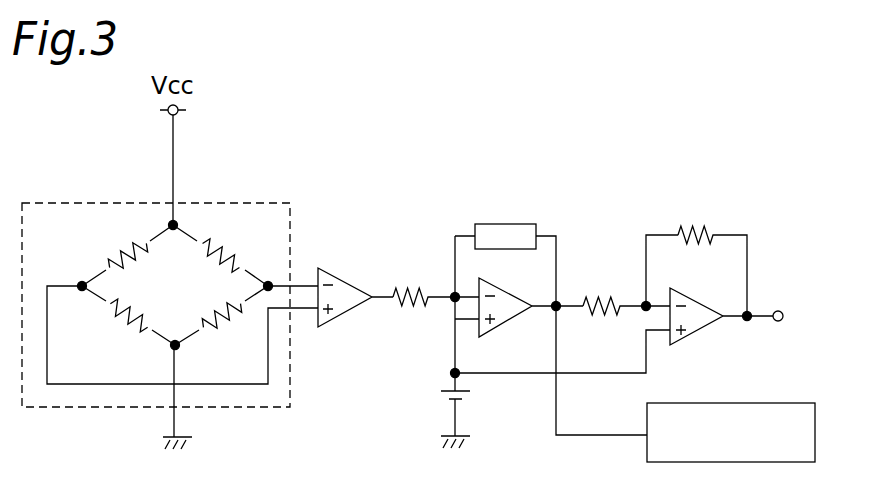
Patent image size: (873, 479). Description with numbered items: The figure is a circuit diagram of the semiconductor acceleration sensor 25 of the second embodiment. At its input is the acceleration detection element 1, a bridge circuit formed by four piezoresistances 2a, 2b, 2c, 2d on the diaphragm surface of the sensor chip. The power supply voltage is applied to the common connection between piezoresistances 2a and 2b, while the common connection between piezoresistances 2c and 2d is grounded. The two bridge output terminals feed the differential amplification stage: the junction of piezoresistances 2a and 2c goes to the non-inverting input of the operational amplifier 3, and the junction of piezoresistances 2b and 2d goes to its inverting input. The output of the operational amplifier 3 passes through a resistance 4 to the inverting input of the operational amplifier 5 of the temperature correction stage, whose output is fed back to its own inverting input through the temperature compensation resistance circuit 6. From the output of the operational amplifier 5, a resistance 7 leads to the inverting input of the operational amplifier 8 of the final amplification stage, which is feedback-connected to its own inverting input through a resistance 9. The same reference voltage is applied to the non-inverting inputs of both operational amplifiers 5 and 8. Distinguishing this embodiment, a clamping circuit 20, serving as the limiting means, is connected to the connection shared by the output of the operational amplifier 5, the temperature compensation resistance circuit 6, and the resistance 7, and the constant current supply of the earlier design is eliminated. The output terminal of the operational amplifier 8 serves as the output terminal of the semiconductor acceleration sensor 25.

The acceleration detection element 1 is at (263, 201).
The piezoresistance 2a is at (128, 248).
The piezoresistance 2b is at (225, 241).
The piezoresistance 2c is at (124, 329).
The piezoresistance 2d is at (226, 328).
The operational amplifier 3 is at (350, 316).
The resistance 4 is at (418, 285).
The operational amplifier 5 is at (512, 323).
The temperature compensation resistance circuit 6 is at (512, 224).
The resistance 7 is at (603, 297).
The operational amplifier 8 is at (710, 306).
The resistance 9 is at (699, 234).
The clamping circuit 20 is at (736, 403).
The semiconductor acceleration sensor 25 is at (415, 199).